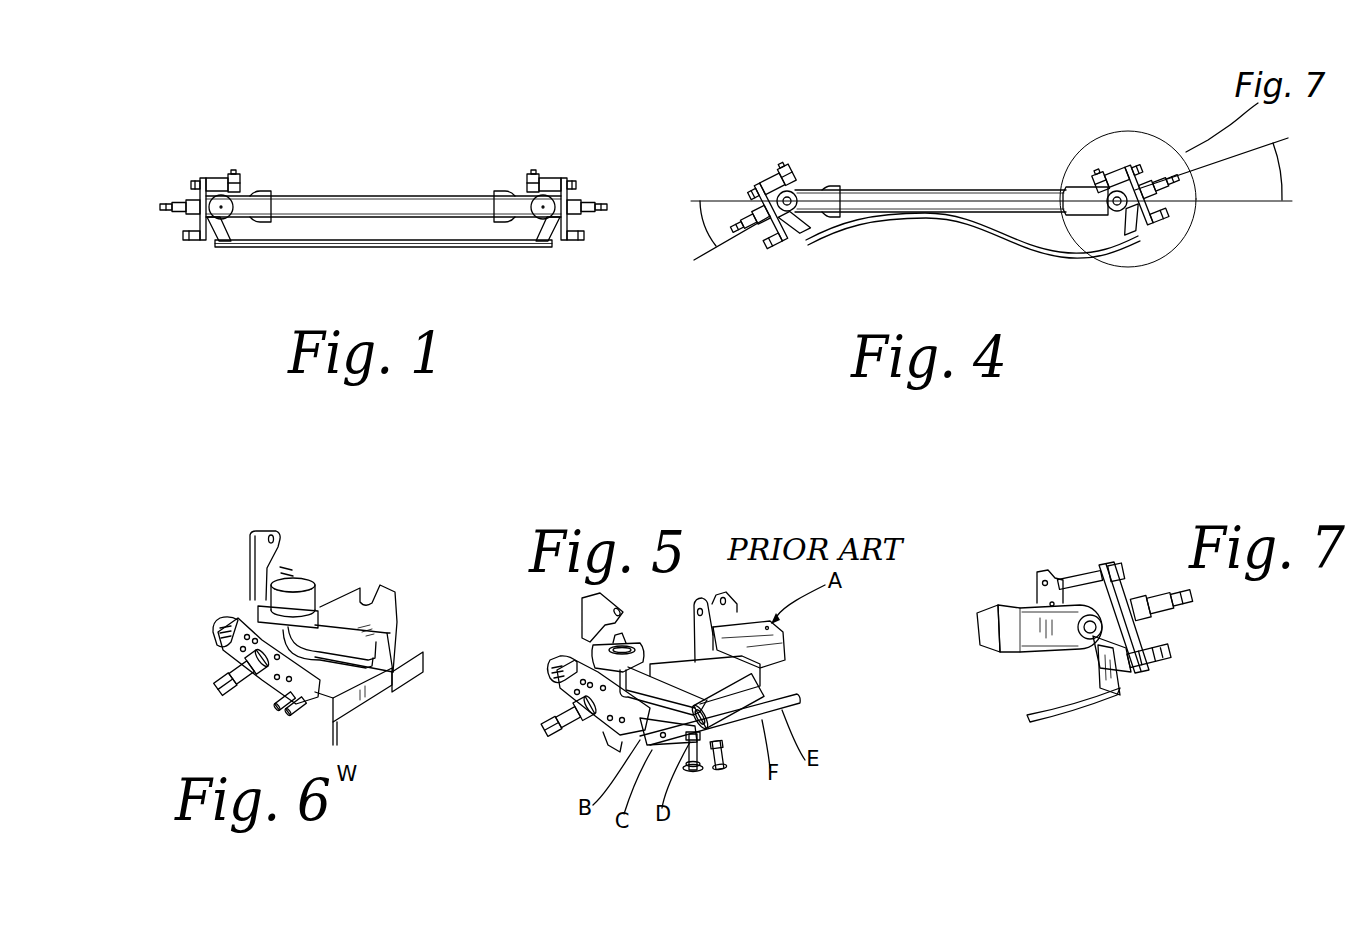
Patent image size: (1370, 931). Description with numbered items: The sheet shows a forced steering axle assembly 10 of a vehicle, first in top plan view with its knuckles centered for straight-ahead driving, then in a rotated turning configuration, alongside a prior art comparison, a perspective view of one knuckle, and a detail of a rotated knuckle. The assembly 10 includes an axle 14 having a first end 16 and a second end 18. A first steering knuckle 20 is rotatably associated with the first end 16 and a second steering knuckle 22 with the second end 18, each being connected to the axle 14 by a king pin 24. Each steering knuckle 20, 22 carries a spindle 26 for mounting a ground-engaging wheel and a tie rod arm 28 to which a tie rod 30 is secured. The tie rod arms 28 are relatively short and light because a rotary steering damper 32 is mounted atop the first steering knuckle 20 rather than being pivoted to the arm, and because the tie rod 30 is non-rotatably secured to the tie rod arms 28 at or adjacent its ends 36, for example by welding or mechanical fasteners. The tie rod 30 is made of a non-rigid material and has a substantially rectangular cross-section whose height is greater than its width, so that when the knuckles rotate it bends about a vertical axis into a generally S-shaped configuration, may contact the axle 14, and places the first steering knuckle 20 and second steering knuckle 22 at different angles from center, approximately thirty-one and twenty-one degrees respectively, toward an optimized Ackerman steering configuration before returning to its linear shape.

In FIG. 1, the steering axle assembly 10 is at (383, 182).
In FIG. 4, the steering axle assembly 10 is at (991, 188).
In FIG. 1, the axle 14 is at (376, 198).
In FIG. 4, the axle 14 is at (955, 191).
In FIG. 6, the axle 14 is at (376, 628).
In FIG. 7, the axle 14 is at (992, 625).
In FIG. 1, the first end 16 is at (254, 197).
In FIG. 4, the first end 16 is at (830, 188).
In FIG. 6, the first end 16 is at (337, 628).
In FIG. 4, the second end 18 is at (1076, 187).
In FIG. 7, the second end 18 is at (1010, 594).
In FIG. 1, the first steering knuckle 20 is at (198, 160).
In FIG. 4, the first steering knuckle 20 is at (735, 132).
In FIG. 6, the first steering knuckle 20 is at (203, 611).
In FIG. 1, the second steering knuckle 22 is at (571, 164).
In FIG. 4, the second steering knuckle 22 is at (1176, 228).
In FIG. 7, the second steering knuckle 22 is at (1180, 669).
In FIG. 1, the king pin 24 is at (544, 195).
In FIG. 4, the king pin 24 is at (1100, 172).
In FIG. 7, the king pin 24 is at (1077, 577).
In FIG. 1, the spindle 26 is at (175, 203).
In FIG. 4, the spindle 26 is at (748, 236).
In FIG. 6, the spindle 26 is at (222, 658).
In FIG. 7, the spindle 26 is at (1158, 590).
In FIG. 1, the tie rod arm 28 is at (213, 241).
In FIG. 4, the tie rod arm 28 is at (790, 246).
In FIG. 6, the tie rod arm 28 is at (316, 702).
In FIG. 7, the tie rod arm 28 is at (1105, 673).
In FIG. 1, the tie rod 30 is at (355, 248).
In FIG. 4, the tie rod 30 is at (981, 246).
In FIG. 6, the tie rod 30 is at (375, 690).
In FIG. 7, the tie rod 30 is at (1062, 705).
In FIG. 1, the rotary steering damper 32 is at (223, 195).
In FIG. 6, the rotary steering damper 32 is at (298, 580).
In FIG. 1, the ends 36 is at (225, 244).
In FIG. 4, the ends 36 is at (803, 230).
In FIG. 6, the ends 36 is at (338, 732).
In FIG. 7, the ends 36 is at (1112, 700).